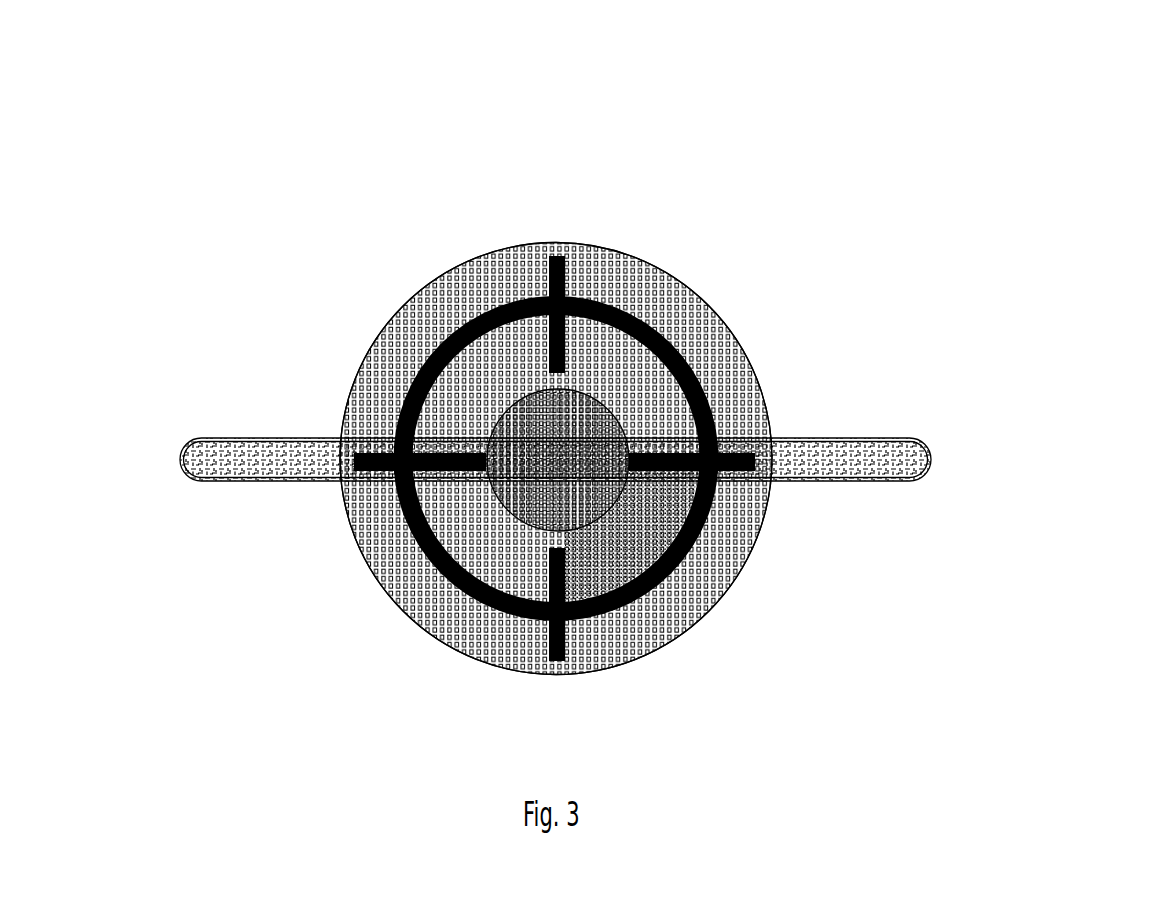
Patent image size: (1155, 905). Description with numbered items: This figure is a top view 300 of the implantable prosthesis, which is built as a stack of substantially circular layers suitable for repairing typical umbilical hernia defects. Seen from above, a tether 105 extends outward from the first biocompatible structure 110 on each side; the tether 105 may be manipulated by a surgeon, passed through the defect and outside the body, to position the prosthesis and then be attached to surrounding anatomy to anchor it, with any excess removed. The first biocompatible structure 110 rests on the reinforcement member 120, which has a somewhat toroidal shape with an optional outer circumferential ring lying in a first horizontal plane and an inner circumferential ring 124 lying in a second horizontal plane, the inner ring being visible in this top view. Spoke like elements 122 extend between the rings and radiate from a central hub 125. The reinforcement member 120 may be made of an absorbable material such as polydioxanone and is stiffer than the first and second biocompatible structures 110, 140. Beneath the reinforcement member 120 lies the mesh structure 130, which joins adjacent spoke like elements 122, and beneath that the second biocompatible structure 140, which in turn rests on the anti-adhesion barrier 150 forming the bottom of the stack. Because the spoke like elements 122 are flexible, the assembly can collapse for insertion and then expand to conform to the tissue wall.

The top view 300 is at (1001, 137).
The tether 105 is at (212, 440).
The first biocompatible structure 110 is at (755, 508).
The anti-adhesion barrier 150 is at (362, 340).
The inner circumferential ring 124 is at (673, 328).
The reinforcement member 120 is at (617, 605).
The spoke like elements 122 is at (558, 283).
The second biocompatible structure 140 is at (623, 543).
The mesh structure 130 is at (527, 522).
The central hub 125 is at (548, 440).